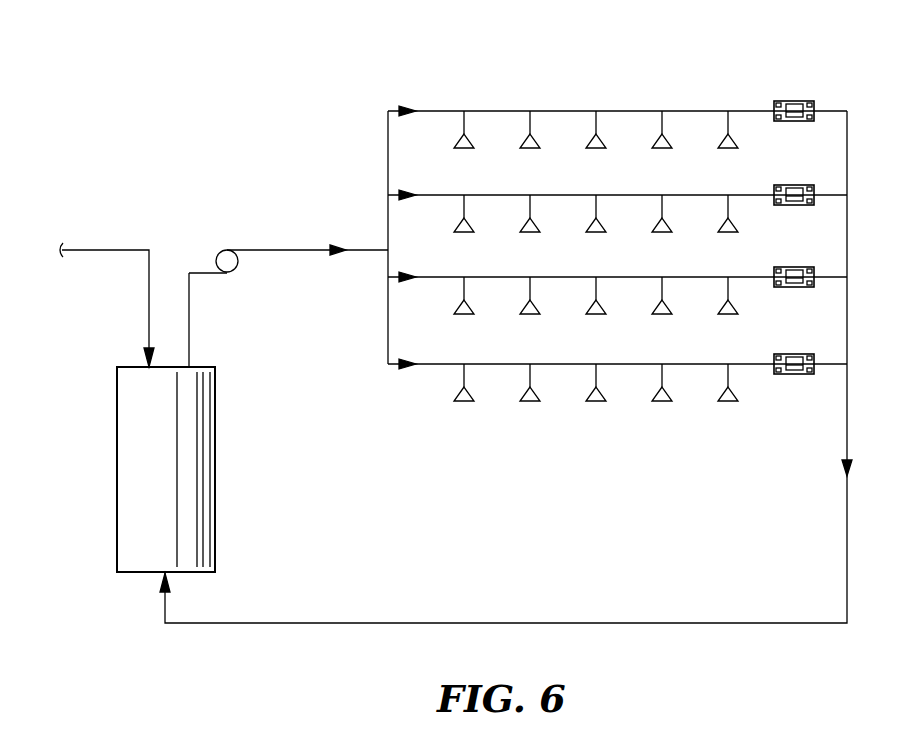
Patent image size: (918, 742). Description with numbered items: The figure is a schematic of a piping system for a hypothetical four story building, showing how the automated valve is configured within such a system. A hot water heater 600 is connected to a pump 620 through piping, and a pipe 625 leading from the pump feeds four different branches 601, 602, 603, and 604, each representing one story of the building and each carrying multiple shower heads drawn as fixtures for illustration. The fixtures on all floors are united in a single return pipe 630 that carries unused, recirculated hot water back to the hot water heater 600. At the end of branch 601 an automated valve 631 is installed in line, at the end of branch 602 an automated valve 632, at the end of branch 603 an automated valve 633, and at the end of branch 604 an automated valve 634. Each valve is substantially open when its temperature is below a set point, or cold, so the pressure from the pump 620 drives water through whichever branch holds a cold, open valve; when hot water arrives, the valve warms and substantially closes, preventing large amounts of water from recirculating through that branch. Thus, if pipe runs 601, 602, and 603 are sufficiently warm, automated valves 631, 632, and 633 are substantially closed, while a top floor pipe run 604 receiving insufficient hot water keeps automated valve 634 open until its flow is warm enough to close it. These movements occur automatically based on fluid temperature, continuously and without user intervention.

The hot water heater 600 is at (136, 478).
The pump 620 is at (217, 259).
The pipe 625 is at (278, 249).
The branch 604 is at (440, 110).
The branch 603 is at (437, 195).
The branch 602 is at (437, 277).
The branch 601 is at (437, 364).
The automated valve 634 is at (795, 115).
The automated valve 633 is at (795, 199).
The automated valve 632 is at (795, 281).
The automated valve 631 is at (795, 368).
The return pipe 630 is at (847, 548).